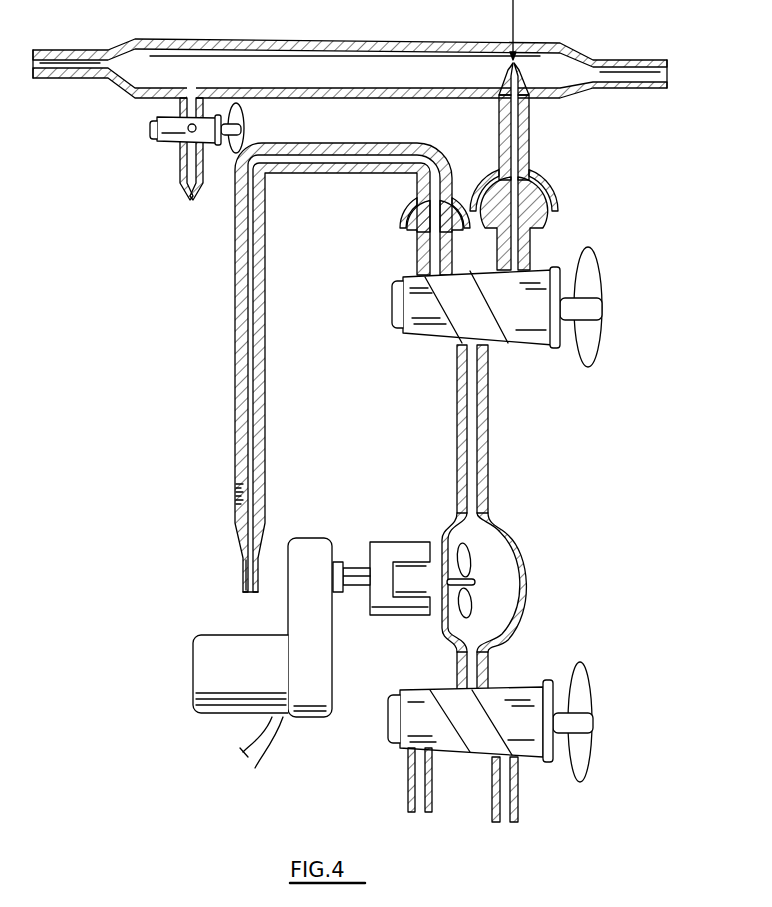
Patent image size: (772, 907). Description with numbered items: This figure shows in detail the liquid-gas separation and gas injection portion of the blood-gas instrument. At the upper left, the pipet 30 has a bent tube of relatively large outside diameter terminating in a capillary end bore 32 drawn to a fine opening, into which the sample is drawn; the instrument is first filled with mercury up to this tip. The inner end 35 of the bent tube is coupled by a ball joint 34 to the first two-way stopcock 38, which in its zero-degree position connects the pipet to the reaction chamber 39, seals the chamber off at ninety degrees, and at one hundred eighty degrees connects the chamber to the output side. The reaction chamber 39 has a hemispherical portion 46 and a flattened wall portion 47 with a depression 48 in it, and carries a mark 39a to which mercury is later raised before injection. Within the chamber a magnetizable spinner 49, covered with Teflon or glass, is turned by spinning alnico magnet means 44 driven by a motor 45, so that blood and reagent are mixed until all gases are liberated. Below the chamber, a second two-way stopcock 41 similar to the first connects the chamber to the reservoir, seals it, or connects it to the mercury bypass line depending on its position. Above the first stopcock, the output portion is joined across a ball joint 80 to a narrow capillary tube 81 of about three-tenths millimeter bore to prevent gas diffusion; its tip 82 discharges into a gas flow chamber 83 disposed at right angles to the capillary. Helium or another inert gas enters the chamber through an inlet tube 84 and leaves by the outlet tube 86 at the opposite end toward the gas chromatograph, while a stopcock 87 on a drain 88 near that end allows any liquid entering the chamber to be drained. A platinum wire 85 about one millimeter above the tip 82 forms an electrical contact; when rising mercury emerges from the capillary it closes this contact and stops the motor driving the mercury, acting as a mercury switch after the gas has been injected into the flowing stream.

The pipet 30 is at (235, 437).
The capillary end bore 32 is at (249, 596).
The ball joint 34 is at (409, 232).
The inner end of bent tube 35 is at (419, 192).
The first two-way stopcock 38 is at (446, 344).
The reaction chamber 39 is at (515, 547).
The 0.12 mark 39a is at (457, 475).
The second two-way stopcock 41 is at (522, 688).
The magnet means 44 is at (402, 546).
The motor 45 is at (213, 704).
The hemispherical portion 46 is at (529, 600).
The flattened wall portion 47 is at (442, 622).
The depression 48 is at (447, 582).
The spinner 49 is at (469, 603).
The ball joint 80 is at (536, 213).
The narrow capillary tube 81 is at (500, 112).
The tip of capillary tube 82 is at (502, 82).
The gas flow chamber 83 is at (437, 38).
The inlet tube 84 is at (657, 60).
The platinum wire 85 is at (513, 17).
The outlet tube 86 is at (100, 44).
The stopcock 87 is at (166, 141).
The drain 88 is at (188, 204).